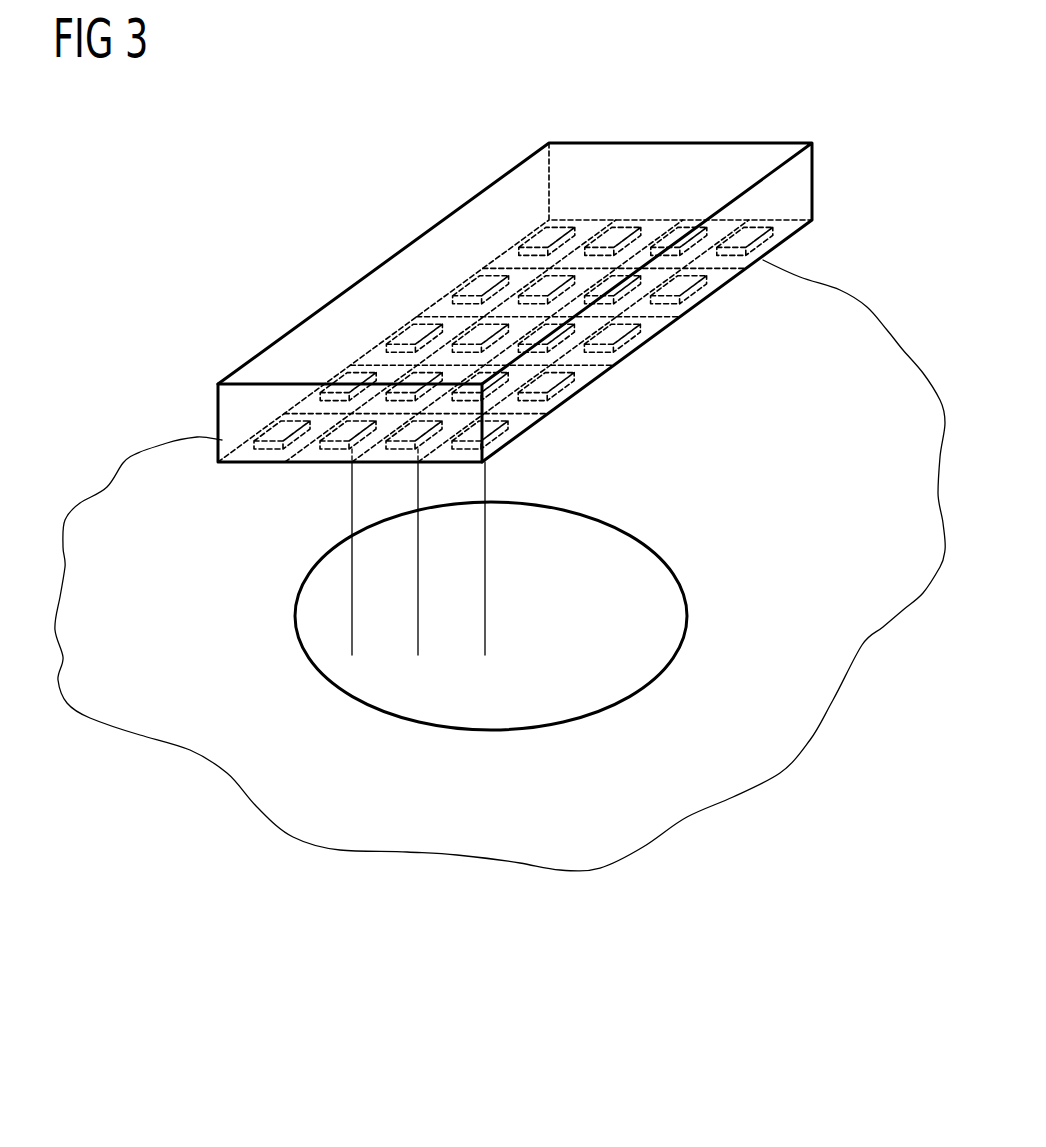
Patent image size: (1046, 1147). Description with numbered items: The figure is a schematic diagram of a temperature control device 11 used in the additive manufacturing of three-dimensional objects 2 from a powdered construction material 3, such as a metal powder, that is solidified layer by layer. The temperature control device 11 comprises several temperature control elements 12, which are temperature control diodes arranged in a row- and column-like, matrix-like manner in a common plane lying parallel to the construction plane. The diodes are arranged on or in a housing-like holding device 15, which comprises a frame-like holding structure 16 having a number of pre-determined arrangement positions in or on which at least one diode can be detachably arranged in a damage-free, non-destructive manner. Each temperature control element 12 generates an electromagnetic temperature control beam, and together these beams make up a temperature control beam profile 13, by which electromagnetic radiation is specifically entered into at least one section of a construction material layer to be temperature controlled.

The three-dimensional object 2 is at (550, 680).
The construction material 3 is at (812, 695).
The temperature control device 11 is at (465, 246).
The temperature control elements 12 is at (697, 288).
The temperature control beam profile 13 is at (510, 589).
The holding device 15 is at (218, 392).
The holding structure 16 is at (238, 455).